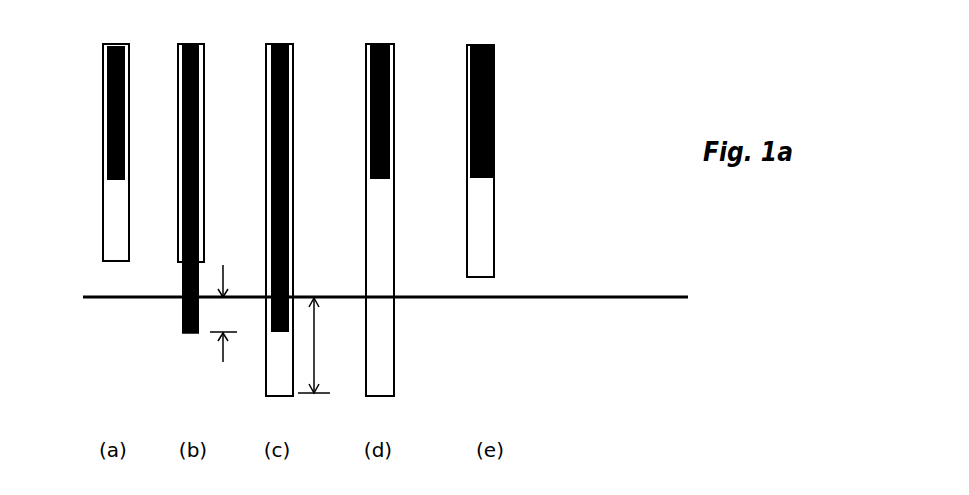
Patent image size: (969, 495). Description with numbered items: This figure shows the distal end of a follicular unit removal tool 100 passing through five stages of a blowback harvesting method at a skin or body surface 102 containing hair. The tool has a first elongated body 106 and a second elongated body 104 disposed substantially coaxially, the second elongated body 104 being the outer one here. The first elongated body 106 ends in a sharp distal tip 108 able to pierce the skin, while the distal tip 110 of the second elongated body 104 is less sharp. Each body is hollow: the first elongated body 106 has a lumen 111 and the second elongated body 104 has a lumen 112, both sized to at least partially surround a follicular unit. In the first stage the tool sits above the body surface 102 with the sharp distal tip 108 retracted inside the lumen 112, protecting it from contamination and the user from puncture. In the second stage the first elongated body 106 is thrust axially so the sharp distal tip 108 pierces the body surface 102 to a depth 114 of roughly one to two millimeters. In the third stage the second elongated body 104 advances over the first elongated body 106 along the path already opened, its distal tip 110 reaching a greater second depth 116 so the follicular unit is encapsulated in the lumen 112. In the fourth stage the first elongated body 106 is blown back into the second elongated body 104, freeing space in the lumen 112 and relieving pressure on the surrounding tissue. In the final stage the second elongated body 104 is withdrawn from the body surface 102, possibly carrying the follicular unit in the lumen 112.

The follicular unit removal tool 100 is at (538, 130).
The body surface 102 is at (385, 321).
The second elongated body 104 is at (103, 220).
The first elongated body 106 is at (182, 311).
The sharp distal tip 108 is at (190, 334).
The distal tip 110 is at (108, 262).
The lumen 111 is at (201, 59).
The lumen 112 is at (482, 227).
The depth 114 is at (226, 313).
The second depth 116 is at (324, 345).